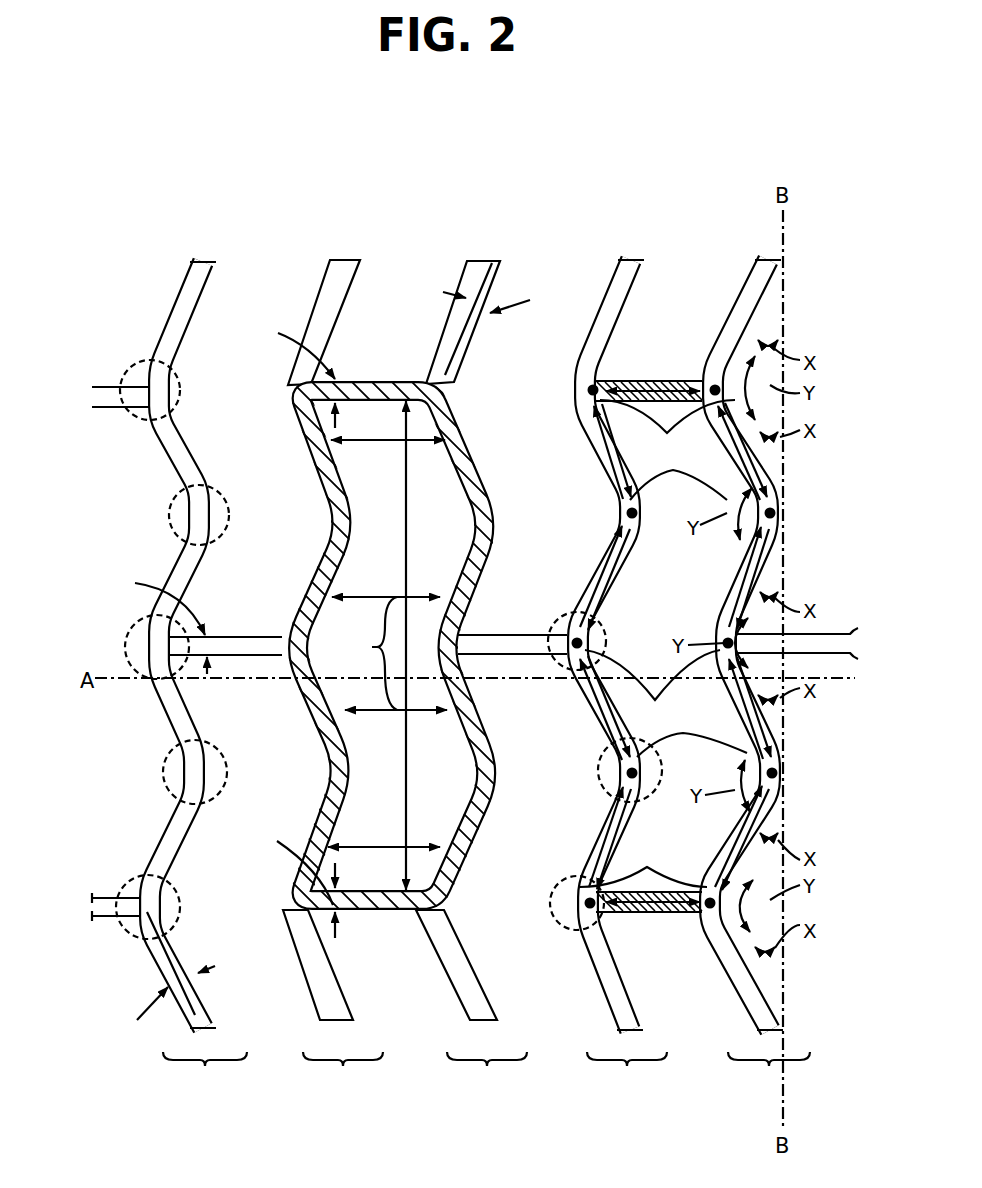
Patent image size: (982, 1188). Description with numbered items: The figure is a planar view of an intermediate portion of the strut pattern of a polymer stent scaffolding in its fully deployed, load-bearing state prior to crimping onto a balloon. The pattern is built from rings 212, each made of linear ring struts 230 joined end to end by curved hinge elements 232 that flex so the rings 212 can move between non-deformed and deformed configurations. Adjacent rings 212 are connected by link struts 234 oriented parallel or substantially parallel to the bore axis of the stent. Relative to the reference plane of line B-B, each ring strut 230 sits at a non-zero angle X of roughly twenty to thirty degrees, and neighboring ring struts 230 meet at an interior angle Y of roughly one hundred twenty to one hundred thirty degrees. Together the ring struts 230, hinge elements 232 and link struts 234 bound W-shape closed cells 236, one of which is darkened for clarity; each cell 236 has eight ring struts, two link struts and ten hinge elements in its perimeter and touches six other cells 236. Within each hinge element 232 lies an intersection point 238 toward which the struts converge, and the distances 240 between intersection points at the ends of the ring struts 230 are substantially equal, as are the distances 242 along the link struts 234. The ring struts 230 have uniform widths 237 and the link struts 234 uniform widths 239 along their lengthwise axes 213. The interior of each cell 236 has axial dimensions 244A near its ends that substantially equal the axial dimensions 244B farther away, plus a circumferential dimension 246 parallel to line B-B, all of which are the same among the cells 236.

The rings 212 is at (486, 678).
The lengthwise axis 213 is at (157, 940).
The ring struts 230 is at (180, 937).
The hinge elements 232 is at (560, 920).
The link struts 234 is at (676, 911).
The W-shape closed cells 236 is at (491, 650).
The ring strut widths 237 is at (332, 658).
The intersection point 238 is at (663, 643).
The link strut widths 239 is at (217, 612).
The distances 240 is at (735, 840).
The distances 242 is at (652, 912).
The axial dimensions 244A is at (372, 846).
The axial dimensions 244B is at (358, 653).
The circumferential dimension 246 is at (408, 487).